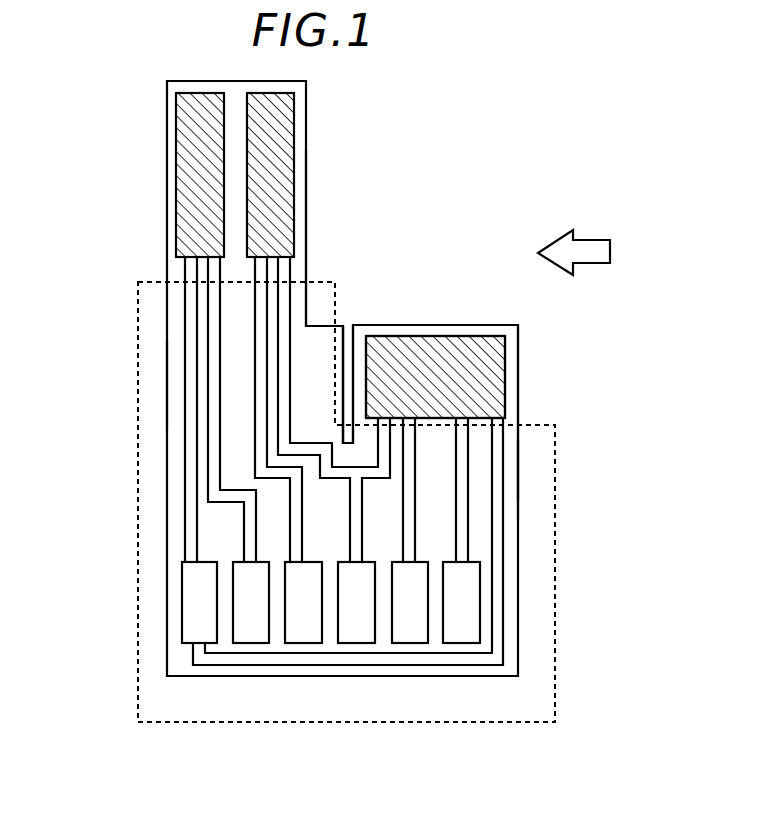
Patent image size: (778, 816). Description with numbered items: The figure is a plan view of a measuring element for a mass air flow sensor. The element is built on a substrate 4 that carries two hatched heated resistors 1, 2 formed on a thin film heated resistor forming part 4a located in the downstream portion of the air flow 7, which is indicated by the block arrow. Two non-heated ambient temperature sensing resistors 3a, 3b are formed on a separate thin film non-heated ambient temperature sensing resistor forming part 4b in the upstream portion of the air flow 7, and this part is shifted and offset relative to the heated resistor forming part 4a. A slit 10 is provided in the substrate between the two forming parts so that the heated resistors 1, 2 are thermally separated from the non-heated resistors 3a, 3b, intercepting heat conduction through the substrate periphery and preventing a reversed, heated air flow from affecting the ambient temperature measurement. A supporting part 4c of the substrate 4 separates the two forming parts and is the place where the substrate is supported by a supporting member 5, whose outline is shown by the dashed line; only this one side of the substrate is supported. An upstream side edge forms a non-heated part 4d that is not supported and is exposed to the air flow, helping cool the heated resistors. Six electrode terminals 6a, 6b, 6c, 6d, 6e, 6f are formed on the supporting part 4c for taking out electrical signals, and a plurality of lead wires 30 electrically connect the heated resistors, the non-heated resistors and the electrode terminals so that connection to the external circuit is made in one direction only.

The heated resistor 1 is at (296, 176).
The heated resistor 2 is at (177, 183).
The non-heated ambient temperature sensing resistor 3a is at (452, 340).
The non-heated ambient temperature sensing resistor 3b is at (435, 377).
The substrate 4 is at (165, 295).
The thin film heated resistor forming part 4a is at (306, 228).
The thin film non-heated ambient temperature sensing resistor forming part 4b is at (518, 375).
The supporting part 4c is at (173, 383).
The non-heated part 4d is at (336, 347).
The supporting member 5 is at (137, 340).
The electrode terminal 6a is at (183, 635).
The electrode terminal 6b is at (258, 640).
The electrode terminal 6c is at (310, 640).
The electrode terminal 6d is at (363, 640).
The electrode terminal 6e is at (415, 640).
The electrode terminal 6f is at (480, 607).
The air flow 7 is at (588, 240).
The slit 10 is at (340, 345).
The lead wires 30 is at (172, 480).